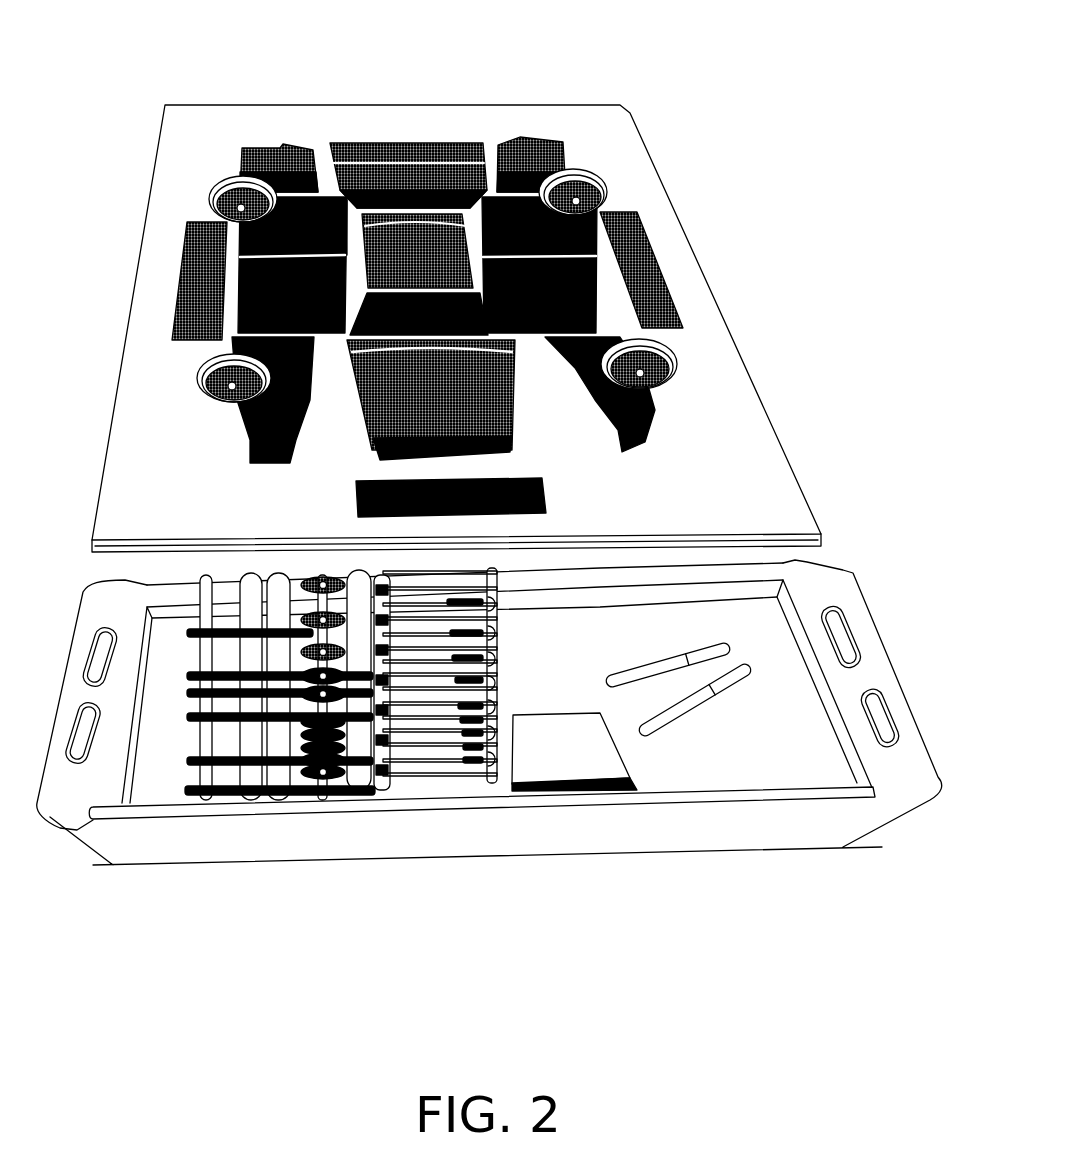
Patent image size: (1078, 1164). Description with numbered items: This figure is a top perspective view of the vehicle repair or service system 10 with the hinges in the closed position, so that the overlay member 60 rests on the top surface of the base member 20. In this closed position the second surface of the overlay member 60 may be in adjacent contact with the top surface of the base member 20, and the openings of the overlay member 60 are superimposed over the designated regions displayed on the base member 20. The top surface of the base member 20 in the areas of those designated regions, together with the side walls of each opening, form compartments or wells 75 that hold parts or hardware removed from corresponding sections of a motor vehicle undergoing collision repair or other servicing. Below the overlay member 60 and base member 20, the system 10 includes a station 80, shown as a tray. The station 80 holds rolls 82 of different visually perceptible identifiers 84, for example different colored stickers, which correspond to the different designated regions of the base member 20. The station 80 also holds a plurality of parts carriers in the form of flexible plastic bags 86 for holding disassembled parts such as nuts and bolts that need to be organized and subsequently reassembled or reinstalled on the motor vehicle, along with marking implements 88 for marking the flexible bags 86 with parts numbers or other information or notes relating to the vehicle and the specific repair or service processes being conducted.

The vehicle repair or service system 10 is at (822, 107).
The base member 20 is at (800, 560).
The overlay member 60 is at (623, 105).
The compartments or wells 75 is at (398, 163).
The station 80 is at (530, 907).
The rolls 82 is at (280, 632).
The visually perceptible identifiers 84 is at (333, 688).
The flexible plastic bags 86 is at (580, 760).
The marking implements 88 is at (707, 698).